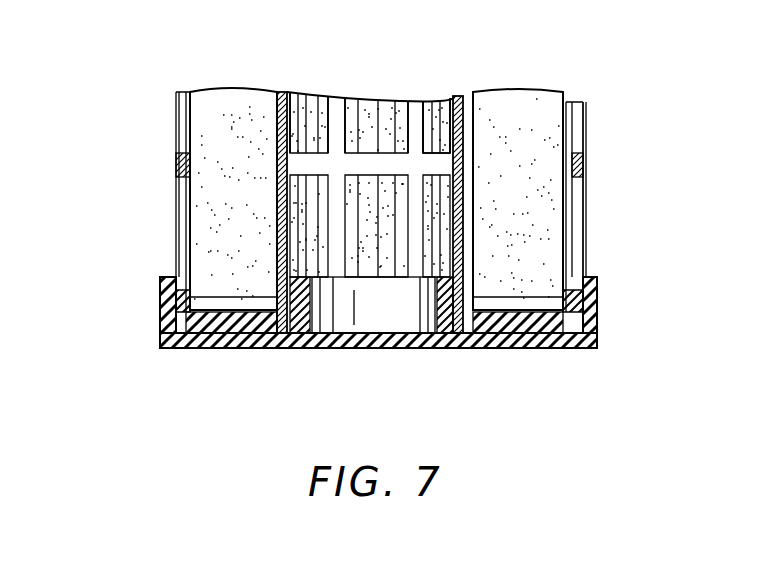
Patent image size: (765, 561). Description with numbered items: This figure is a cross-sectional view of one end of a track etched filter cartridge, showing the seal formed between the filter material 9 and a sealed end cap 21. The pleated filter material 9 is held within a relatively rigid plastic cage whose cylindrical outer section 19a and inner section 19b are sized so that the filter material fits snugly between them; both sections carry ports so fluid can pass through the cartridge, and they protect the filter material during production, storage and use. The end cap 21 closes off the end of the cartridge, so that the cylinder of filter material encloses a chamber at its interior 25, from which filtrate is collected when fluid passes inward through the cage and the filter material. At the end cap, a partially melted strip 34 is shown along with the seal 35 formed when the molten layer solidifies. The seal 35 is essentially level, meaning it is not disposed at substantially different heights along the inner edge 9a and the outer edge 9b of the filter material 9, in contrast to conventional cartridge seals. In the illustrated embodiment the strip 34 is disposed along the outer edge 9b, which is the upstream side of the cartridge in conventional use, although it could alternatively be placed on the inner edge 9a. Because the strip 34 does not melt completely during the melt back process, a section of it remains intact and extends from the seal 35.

The filter material 9 is at (222, 193).
The inner edge of the filter material 9a is at (285, 92).
The outer edge of the filter material 9b is at (190, 240).
The cylindrical outer section of the cage 19a is at (584, 108).
The inner section of the cage 19b is at (447, 100).
The end cap 21 is at (598, 318).
The interior of the cylinder of filter material 25 is at (366, 88).
The strip 34 is at (205, 300).
The seal 35 is at (248, 327).